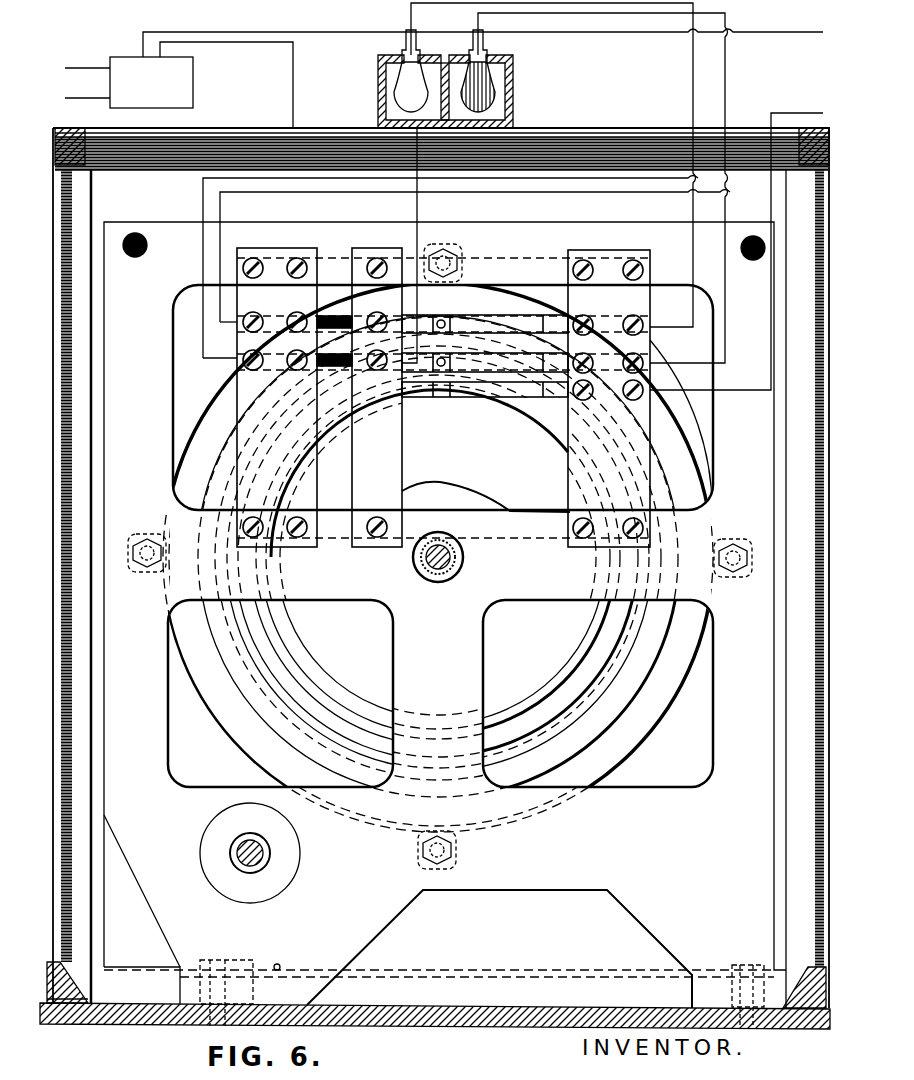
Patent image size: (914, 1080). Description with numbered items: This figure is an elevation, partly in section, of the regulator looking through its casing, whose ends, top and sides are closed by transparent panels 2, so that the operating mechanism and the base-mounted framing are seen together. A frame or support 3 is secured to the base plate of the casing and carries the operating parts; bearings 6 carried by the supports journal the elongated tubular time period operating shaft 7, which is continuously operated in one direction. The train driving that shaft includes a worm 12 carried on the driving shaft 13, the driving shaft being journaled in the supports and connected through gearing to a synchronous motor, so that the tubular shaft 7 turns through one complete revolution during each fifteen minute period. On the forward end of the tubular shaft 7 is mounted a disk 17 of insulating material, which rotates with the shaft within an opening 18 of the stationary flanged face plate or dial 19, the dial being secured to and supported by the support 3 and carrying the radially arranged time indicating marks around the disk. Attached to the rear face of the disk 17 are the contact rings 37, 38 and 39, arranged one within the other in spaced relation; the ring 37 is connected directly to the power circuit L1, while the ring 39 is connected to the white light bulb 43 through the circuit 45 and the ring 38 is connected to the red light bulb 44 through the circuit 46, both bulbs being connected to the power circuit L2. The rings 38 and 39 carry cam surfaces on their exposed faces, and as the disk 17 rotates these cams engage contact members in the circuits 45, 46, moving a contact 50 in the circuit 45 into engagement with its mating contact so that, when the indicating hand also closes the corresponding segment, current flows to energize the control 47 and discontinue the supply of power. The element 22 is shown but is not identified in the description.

The transparent panel 2 is at (213, 136).
The frame or support 3 is at (571, 891).
The bearing 6 is at (447, 580).
The tubular time period operating shaft 7 is at (456, 565).
The worm 12 is at (438, 568).
The driving shaft 13 is at (263, 853).
The disk 17 is at (230, 716).
The opening 18 is at (208, 413).
The face plate or dial 19 is at (128, 222).
The shaft end 22 is at (450, 553).
The contact ring 37 is at (558, 673).
The contact ring 38 is at (614, 641).
The contact ring 39 is at (637, 680).
The electric light bulb 43 is at (393, 97).
The electric light bulb 44 is at (496, 100).
The circuit 45 is at (693, 240).
The circuit 46 is at (733, 297).
The control 47 is at (193, 65).
The contact 50 is at (293, 78).
The power circuit L1 is at (736, 242).
The power circuit L2 is at (483, 35).